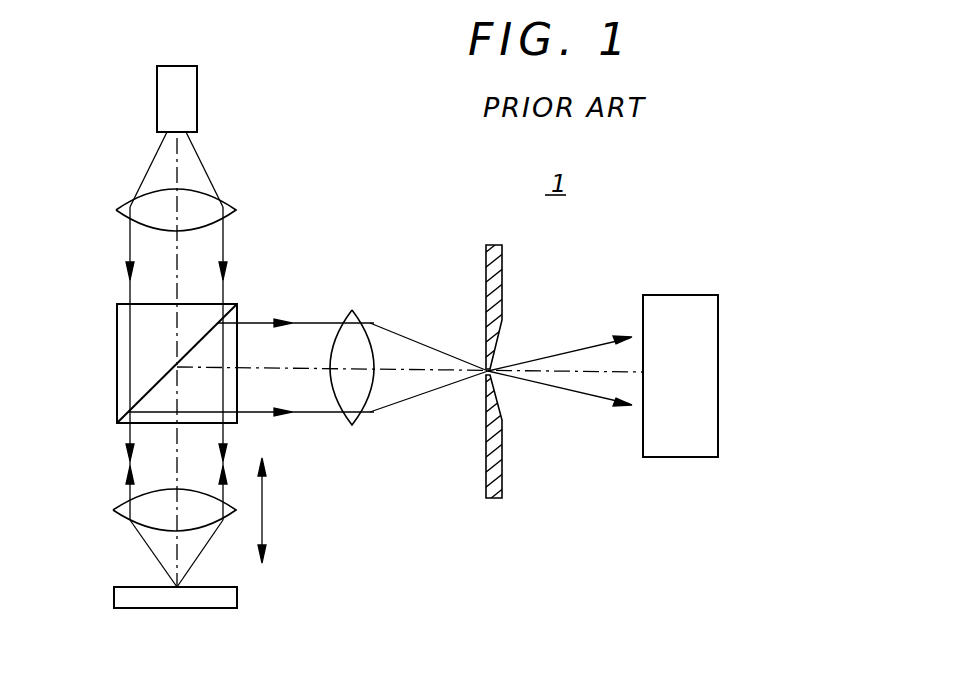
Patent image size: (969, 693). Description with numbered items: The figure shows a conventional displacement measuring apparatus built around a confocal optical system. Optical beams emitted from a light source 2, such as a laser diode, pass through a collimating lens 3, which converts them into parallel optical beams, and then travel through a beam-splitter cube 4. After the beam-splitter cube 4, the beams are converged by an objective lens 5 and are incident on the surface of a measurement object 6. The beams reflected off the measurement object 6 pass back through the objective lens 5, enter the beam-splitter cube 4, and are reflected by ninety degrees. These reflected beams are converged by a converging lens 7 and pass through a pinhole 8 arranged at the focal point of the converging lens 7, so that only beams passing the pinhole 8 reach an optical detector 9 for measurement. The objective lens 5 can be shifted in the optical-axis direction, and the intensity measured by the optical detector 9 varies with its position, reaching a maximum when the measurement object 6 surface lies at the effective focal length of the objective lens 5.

The light source 2 is at (170, 121).
The collimating lens 3 is at (148, 217).
The beam-splitter cube 4 is at (116, 371).
The objective lens 5 is at (150, 515).
The measurement object 6 is at (230, 598).
The converging lens 7 is at (355, 393).
The pinhole 8 is at (480, 383).
The optical detector 9 is at (676, 312).